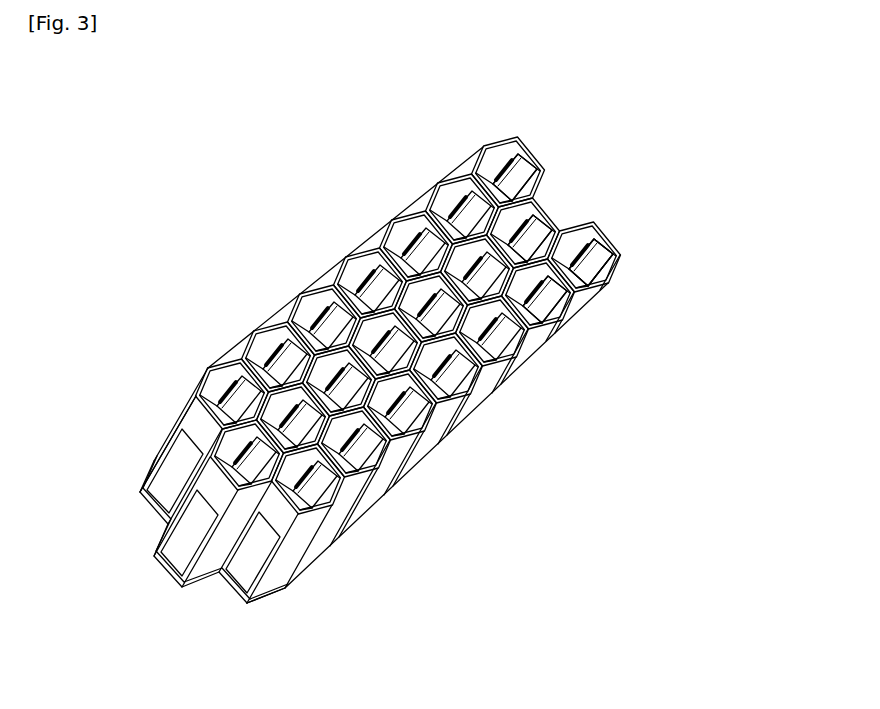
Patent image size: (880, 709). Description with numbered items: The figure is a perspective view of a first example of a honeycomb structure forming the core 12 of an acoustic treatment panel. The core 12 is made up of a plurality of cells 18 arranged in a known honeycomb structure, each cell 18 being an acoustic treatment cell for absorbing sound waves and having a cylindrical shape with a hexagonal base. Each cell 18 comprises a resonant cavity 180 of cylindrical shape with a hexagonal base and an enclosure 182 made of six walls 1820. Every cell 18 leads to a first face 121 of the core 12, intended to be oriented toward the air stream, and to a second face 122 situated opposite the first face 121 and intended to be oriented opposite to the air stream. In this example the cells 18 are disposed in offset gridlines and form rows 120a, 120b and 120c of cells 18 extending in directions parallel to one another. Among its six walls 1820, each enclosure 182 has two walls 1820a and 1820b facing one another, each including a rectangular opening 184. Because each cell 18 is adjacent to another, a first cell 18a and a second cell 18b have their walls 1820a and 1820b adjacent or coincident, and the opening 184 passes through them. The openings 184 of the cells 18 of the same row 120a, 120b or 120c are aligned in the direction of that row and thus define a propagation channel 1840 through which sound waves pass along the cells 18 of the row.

The core 12 is at (724, 228).
The cell 18 is at (163, 540).
The first cell 18a is at (452, 440).
The second cell 18b is at (492, 405).
The row 120a is at (224, 604).
The row 120b is at (159, 578).
The row 120c is at (536, 139).
The first face 121 is at (211, 354).
The second face 122 is at (139, 455).
The resonant cavity 180 is at (258, 356).
The enclosure 182 is at (343, 253).
The rectangular opening 184 is at (594, 257).
The wall 1820 is at (615, 240).
The wall 1820a is at (597, 250).
The wall 1820b is at (580, 276).
The propagation channel 1840 is at (171, 474).